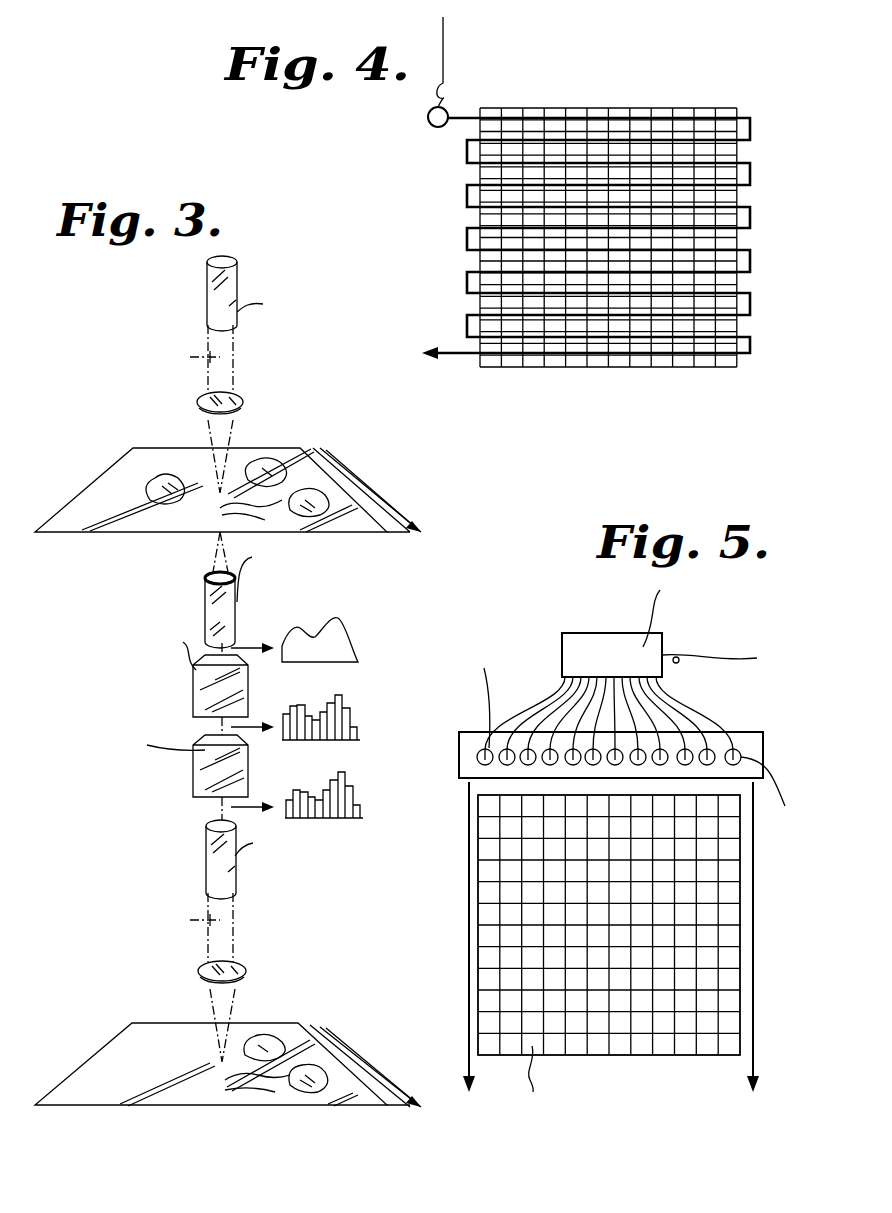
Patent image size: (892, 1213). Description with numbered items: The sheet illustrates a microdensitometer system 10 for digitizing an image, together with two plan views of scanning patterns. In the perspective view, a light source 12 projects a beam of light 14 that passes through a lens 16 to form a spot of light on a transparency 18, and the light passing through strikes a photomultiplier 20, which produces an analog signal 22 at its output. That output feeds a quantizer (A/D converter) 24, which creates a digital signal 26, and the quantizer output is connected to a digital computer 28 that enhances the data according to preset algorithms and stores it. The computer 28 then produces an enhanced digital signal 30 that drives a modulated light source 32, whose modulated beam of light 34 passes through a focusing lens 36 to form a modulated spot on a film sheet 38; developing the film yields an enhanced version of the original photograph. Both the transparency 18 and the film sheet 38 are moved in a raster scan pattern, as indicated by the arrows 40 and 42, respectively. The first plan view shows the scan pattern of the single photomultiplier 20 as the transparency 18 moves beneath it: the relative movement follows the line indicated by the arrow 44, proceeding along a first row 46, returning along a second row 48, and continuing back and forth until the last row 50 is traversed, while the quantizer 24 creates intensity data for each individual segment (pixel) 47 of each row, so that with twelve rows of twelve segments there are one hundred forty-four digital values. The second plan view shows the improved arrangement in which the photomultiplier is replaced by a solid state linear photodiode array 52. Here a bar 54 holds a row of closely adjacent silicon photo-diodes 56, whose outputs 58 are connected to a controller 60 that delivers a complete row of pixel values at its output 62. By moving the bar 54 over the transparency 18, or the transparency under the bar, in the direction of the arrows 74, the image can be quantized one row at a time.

In FIG. 3, the microdensitometer system 10 is at (148, 432).
In FIG. 3, the light source 12 is at (231, 288).
In FIG. 3, the beam of light 14 is at (188, 356).
In FIG. 3, the lens 16 is at (240, 401).
In FIG. 3, the transparency 18 is at (268, 454).
In FIG. 4, the transparency 18 is at (594, 98).
In FIG. 5, the transparency 18 is at (487, 978).
In FIG. 3, the photomultiplier 20 is at (217, 611).
In FIG. 4, the photomultiplier 20 is at (428, 117).
In FIG. 3, the analog signal 22 is at (282, 630).
In FIG. 3, the quantizer (A/D converter) 24 is at (212, 687).
In FIG. 3, the digital signal 26 is at (283, 708).
In FIG. 3, the digital computer 28 is at (212, 768).
In FIG. 3, the enhanced digital signal 30 is at (284, 787).
In FIG. 3, the modulated light source 32 is at (238, 868).
In FIG. 3, the modulated beam of light 34 is at (187, 922).
In FIG. 3, the focusing lens 36 is at (200, 977).
In FIG. 3, the film sheet 38 is at (173, 1092).
In FIG. 3, the arrow 40 is at (353, 472).
In FIG. 3, the arrow 42 is at (357, 1050).
In FIG. 4, the arrow 44 is at (467, 186).
In FIG. 4, the first row 46 is at (487, 108).
In FIG. 4, the segment (pixel) 47 is at (641, 105).
In FIG. 4, the second row 48 is at (735, 147).
In FIG. 4, the last row 50 is at (493, 363).
In FIG. 5, the solid state linear photodiode array 52 is at (524, 697).
In FIG. 5, the bar 54 is at (474, 741).
In FIG. 5, the silicon photo-diodes 56 is at (768, 795).
In FIG. 5, the outputs 58 is at (690, 711).
In FIG. 5, the controller 60 is at (613, 640).
In FIG. 5, the output 62 is at (703, 651).
In FIG. 5, the arrows 74 is at (467, 866).